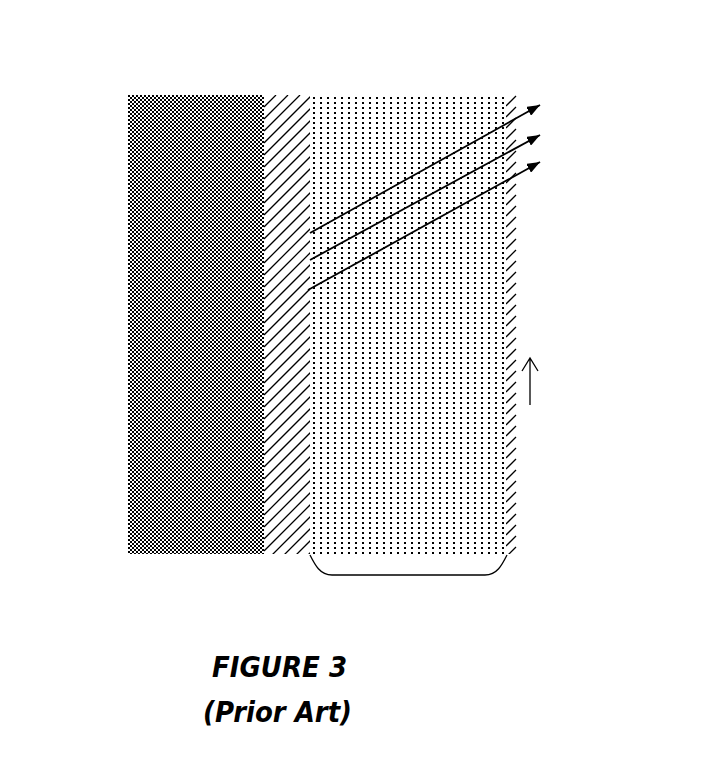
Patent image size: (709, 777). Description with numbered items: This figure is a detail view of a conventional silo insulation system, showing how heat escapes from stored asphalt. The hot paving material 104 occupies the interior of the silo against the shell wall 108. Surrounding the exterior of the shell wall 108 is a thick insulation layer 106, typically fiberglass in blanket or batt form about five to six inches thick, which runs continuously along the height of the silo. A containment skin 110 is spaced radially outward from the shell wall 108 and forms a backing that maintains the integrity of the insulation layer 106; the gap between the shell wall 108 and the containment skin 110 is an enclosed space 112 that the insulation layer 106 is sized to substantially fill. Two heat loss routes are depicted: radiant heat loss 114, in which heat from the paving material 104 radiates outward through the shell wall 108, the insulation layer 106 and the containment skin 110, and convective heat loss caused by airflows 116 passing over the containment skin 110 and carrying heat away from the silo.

The paving material 104 is at (143, 277).
The insulation layer 106 is at (397, 120).
The shell wall 108 is at (282, 120).
The containment skin 110 is at (510, 104).
The enclosed space 112 is at (408, 575).
The radiant heat loss 114 is at (487, 163).
The airflows 116 is at (530, 382).